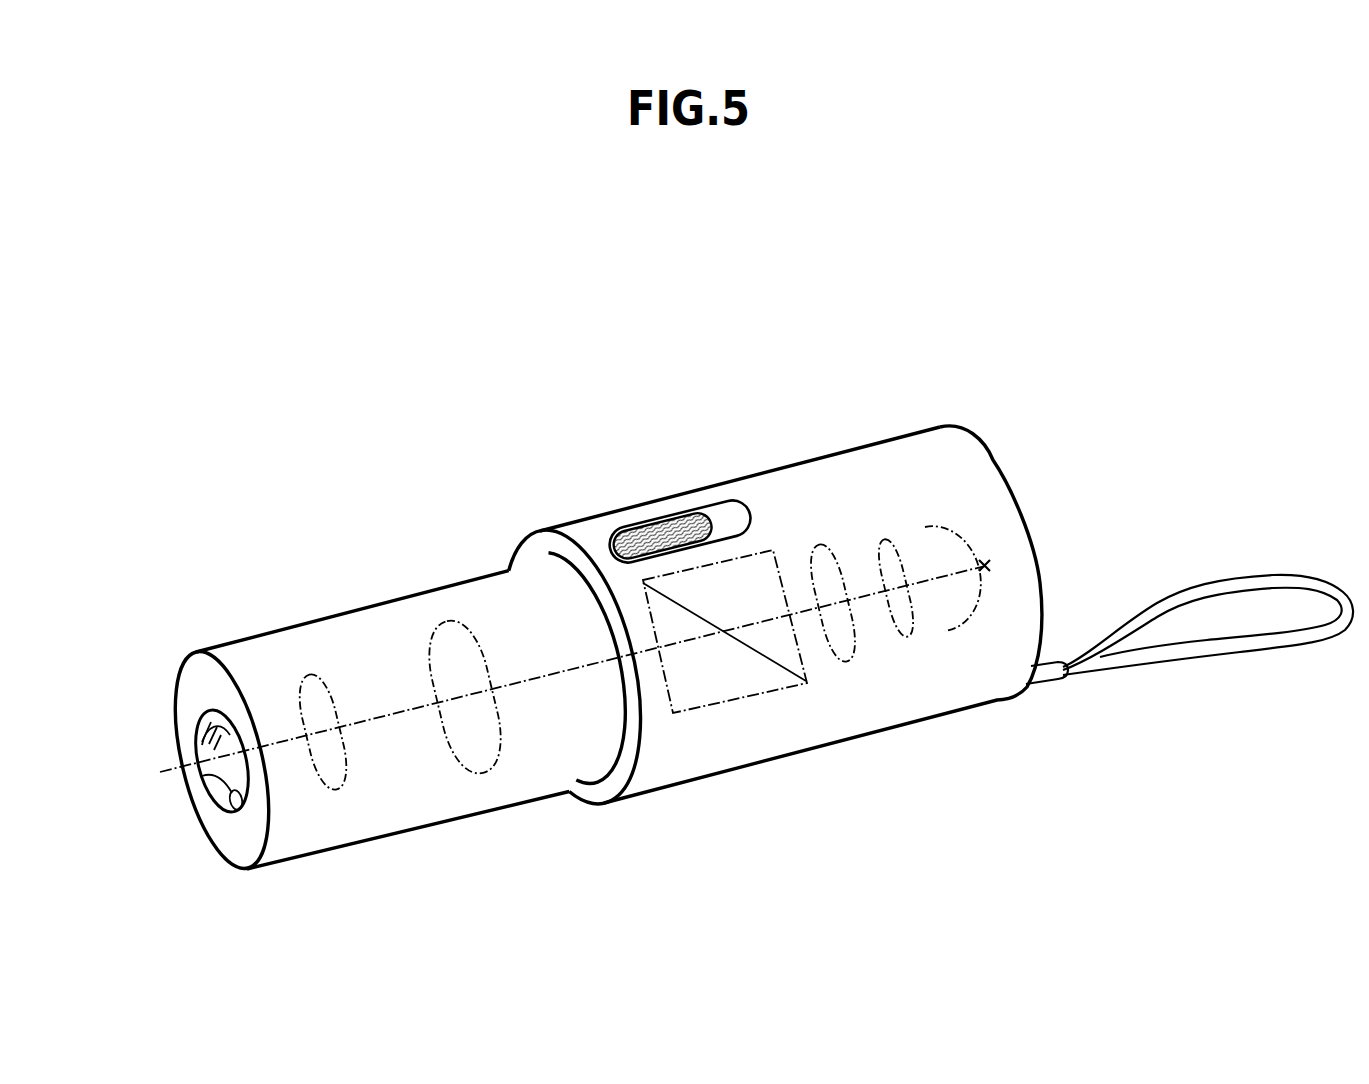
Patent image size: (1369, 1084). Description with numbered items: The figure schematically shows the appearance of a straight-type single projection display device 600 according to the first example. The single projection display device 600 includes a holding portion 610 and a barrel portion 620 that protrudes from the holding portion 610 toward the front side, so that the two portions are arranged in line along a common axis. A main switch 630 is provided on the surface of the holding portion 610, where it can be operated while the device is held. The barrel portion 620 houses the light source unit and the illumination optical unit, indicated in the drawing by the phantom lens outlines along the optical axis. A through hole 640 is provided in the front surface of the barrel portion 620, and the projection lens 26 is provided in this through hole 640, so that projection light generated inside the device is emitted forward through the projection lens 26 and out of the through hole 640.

The single projection display device 600 is at (968, 333).
The holding portion 610 is at (573, 531).
The barrel portion 620 is at (382, 618).
The main switch 630 is at (686, 509).
The through hole 640 is at (233, 867).
The projection lens 26 is at (199, 800).